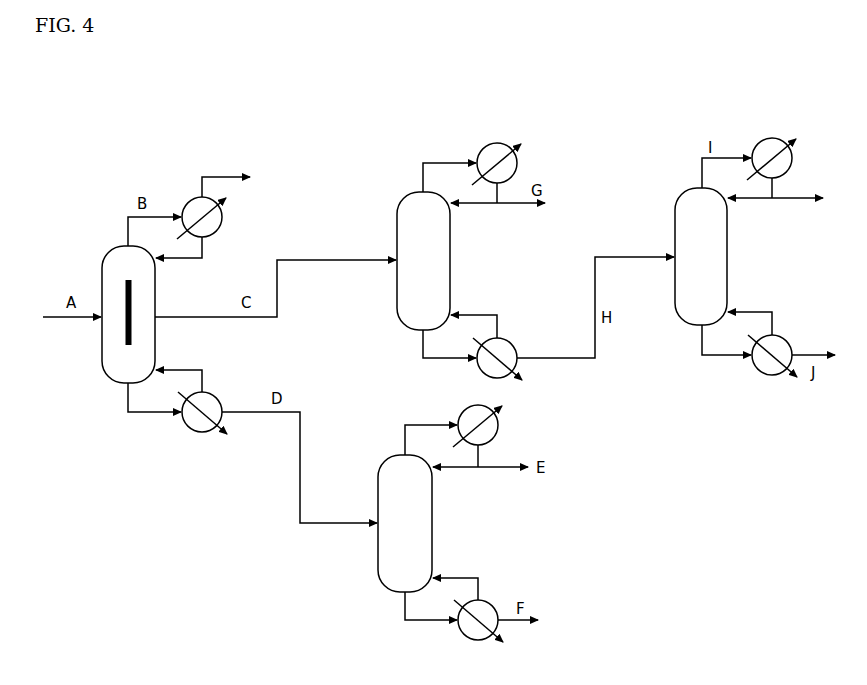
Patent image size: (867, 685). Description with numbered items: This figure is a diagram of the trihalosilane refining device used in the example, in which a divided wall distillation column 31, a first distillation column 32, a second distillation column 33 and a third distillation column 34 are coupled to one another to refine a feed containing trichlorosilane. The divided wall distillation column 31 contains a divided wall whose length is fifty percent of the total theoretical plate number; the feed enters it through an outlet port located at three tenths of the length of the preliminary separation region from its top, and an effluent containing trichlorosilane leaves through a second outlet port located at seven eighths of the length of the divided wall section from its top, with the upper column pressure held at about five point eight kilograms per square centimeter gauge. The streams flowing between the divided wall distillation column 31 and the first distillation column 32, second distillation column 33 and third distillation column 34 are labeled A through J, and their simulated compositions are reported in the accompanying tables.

The divided wall distillation column 31 is at (98, 242).
The first distillation column 32 is at (390, 197).
The second distillation column 33 is at (377, 453).
The third distillation column 34 is at (670, 193).